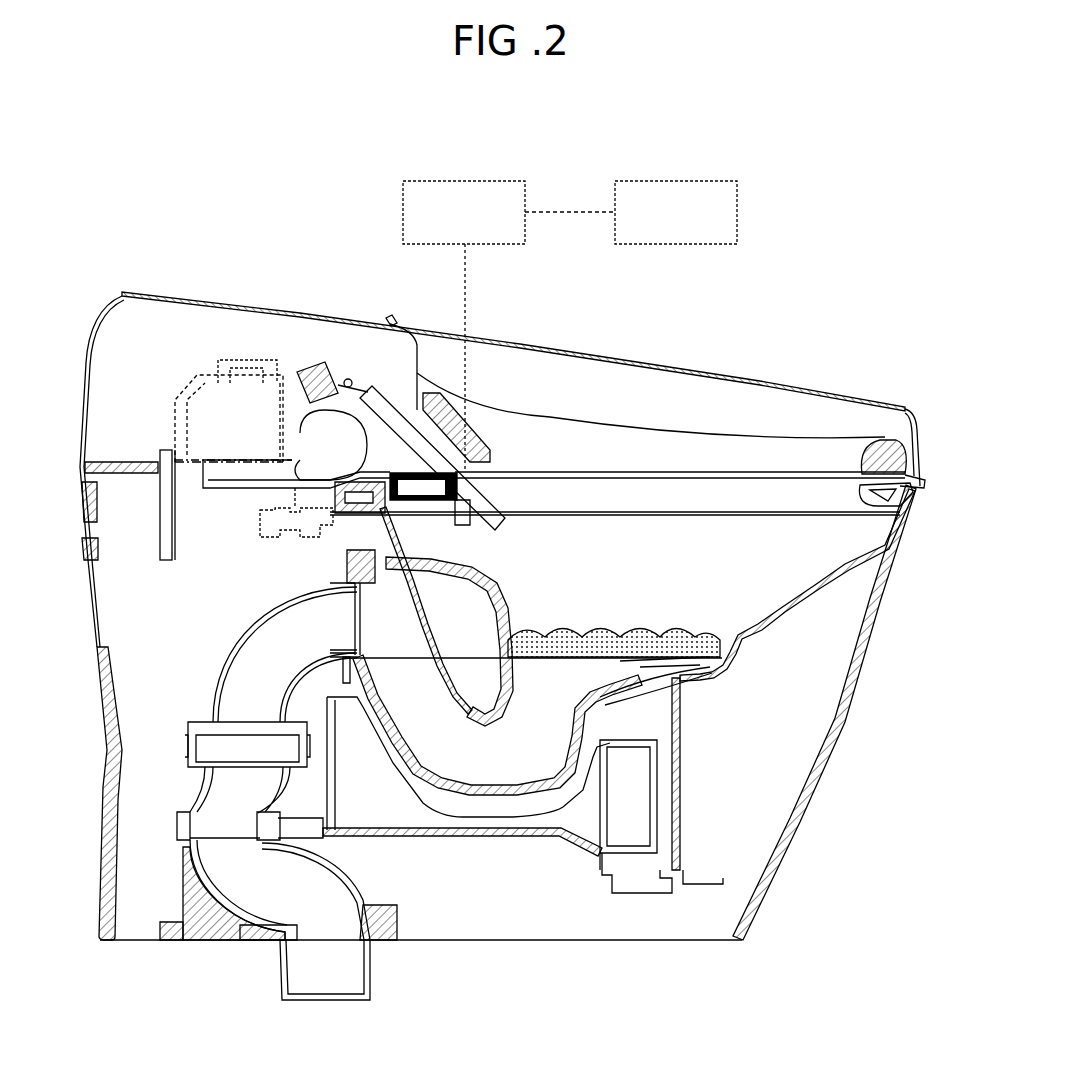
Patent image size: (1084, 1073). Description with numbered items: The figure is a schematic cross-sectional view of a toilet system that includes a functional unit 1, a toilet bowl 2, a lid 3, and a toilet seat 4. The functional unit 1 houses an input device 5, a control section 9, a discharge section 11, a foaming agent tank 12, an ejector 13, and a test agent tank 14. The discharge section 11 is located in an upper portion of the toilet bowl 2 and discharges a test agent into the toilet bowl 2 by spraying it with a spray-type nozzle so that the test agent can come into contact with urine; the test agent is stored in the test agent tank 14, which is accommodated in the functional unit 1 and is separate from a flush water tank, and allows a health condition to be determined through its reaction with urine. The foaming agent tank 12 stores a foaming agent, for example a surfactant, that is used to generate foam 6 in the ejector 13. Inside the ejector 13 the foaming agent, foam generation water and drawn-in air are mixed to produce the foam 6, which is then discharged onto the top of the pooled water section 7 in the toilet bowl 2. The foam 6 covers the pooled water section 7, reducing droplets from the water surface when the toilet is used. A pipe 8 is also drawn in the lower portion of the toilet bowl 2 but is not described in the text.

The functional unit 1 is at (105, 248).
The toilet bowl 2 is at (887, 670).
The lid 3 is at (720, 375).
The toilet seat 4 is at (905, 475).
The input device 5 is at (720, 181).
The foam 6 is at (683, 622).
The pooled water section 7 is at (640, 680).
The water supply pipe 8 is at (233, 668).
The control section 9 is at (478, 181).
The discharge section 11 is at (503, 527).
The foaming agent tank 12 is at (280, 382).
The ejector 13 is at (265, 540).
The test agent tank 14 is at (187, 390).